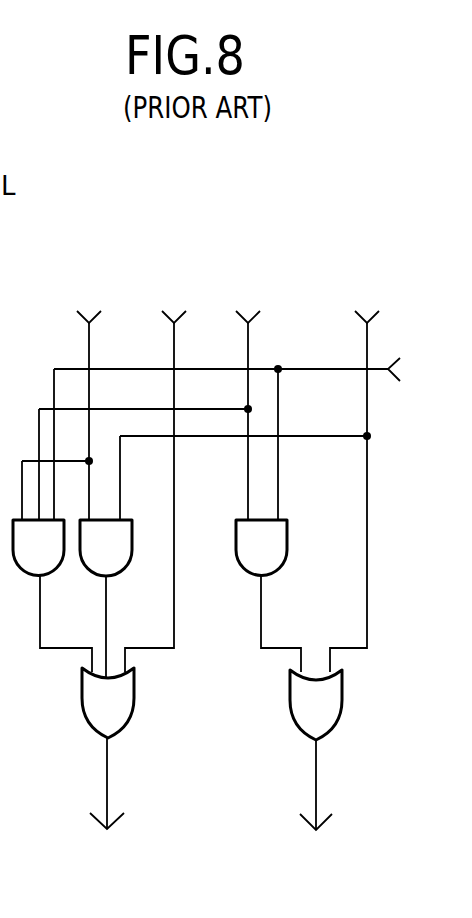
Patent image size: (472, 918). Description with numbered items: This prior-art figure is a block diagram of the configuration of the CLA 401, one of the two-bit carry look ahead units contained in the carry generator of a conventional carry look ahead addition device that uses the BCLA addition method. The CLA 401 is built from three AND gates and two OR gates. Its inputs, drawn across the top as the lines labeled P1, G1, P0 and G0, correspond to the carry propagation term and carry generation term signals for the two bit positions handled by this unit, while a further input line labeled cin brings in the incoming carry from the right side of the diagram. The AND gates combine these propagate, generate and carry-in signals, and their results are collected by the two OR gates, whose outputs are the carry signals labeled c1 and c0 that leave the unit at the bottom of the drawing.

The CLA 401 is at (288, 253).
The propagate signal input P1 is at (65, 397).
The generate signal input G1 is at (157, 473).
The propagate signal input P0 is at (152, 395).
The generate signal input G0 is at (252, 473).
The carry input cin is at (253, 438).
The carry output c1 is at (107, 807).
The carry output c0 is at (316, 808).